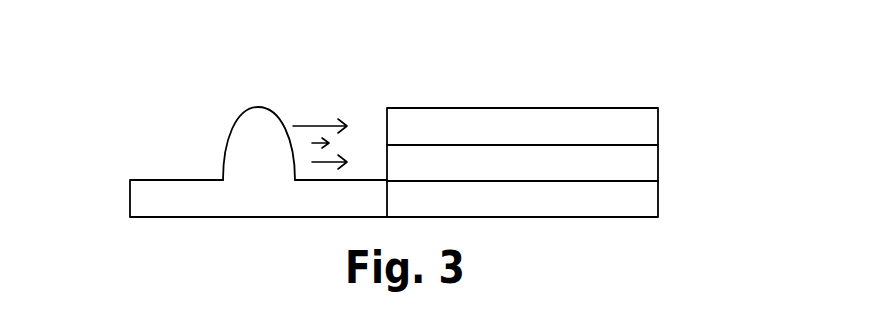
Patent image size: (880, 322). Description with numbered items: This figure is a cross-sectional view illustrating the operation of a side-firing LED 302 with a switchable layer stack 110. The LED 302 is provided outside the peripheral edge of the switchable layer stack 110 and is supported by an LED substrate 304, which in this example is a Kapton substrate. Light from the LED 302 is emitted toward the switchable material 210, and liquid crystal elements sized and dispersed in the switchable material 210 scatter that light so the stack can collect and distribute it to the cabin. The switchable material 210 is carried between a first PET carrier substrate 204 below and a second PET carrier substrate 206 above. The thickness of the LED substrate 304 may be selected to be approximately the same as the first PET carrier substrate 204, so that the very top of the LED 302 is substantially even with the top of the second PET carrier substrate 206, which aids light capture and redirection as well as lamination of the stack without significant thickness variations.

The switchable layer stack 110 is at (611, 71).
The second PET carrier substrate 206 is at (659, 127).
The switchable material 210 is at (659, 163).
The first PET carrier substrate 204 is at (659, 198).
The LED 302 is at (225, 143).
The LED substrate 304 is at (130, 200).